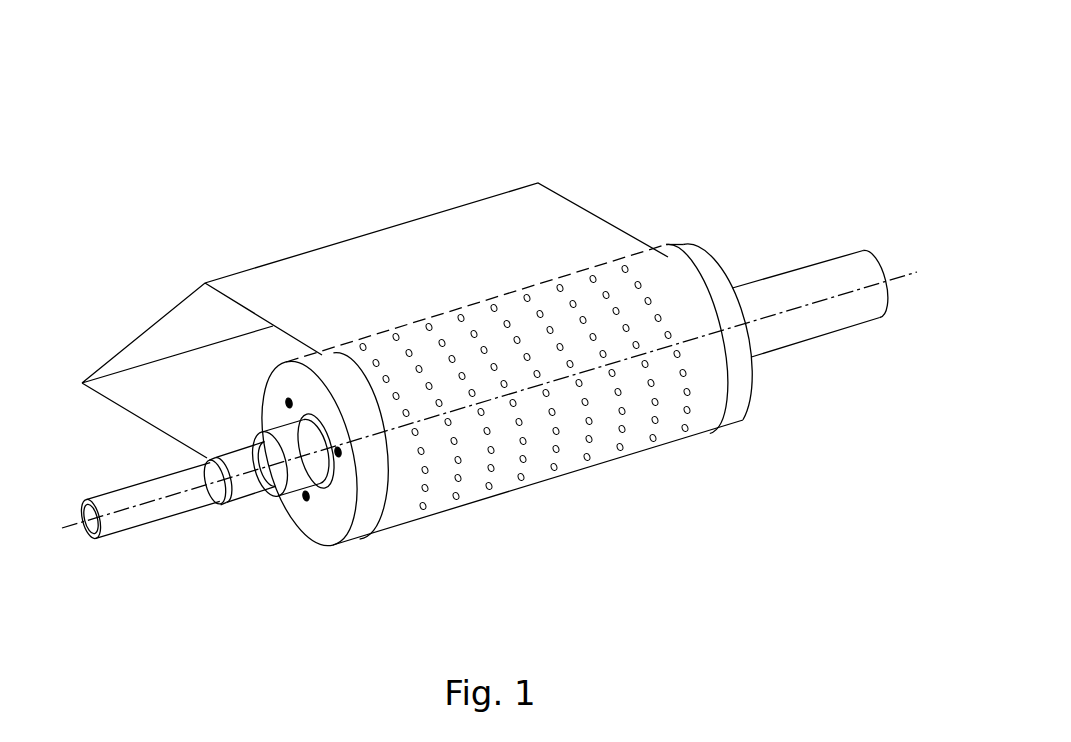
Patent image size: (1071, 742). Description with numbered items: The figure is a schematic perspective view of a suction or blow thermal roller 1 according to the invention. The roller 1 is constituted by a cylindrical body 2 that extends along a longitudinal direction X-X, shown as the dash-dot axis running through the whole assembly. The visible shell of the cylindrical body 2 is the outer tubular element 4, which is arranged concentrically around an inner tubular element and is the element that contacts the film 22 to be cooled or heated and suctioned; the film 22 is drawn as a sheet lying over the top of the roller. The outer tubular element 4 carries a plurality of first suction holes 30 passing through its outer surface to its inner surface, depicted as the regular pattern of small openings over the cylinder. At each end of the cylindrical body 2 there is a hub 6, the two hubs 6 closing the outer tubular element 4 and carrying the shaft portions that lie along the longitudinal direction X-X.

The suction or blow thermal roller 1 is at (738, 167).
The cylindrical body 2 is at (712, 282).
The outer tubular element 4 is at (732, 403).
The hubs 6 is at (817, 323).
The film 22 is at (520, 207).
The first suction holes 30 is at (402, 315).
The longitudinal direction X is at (63, 529).